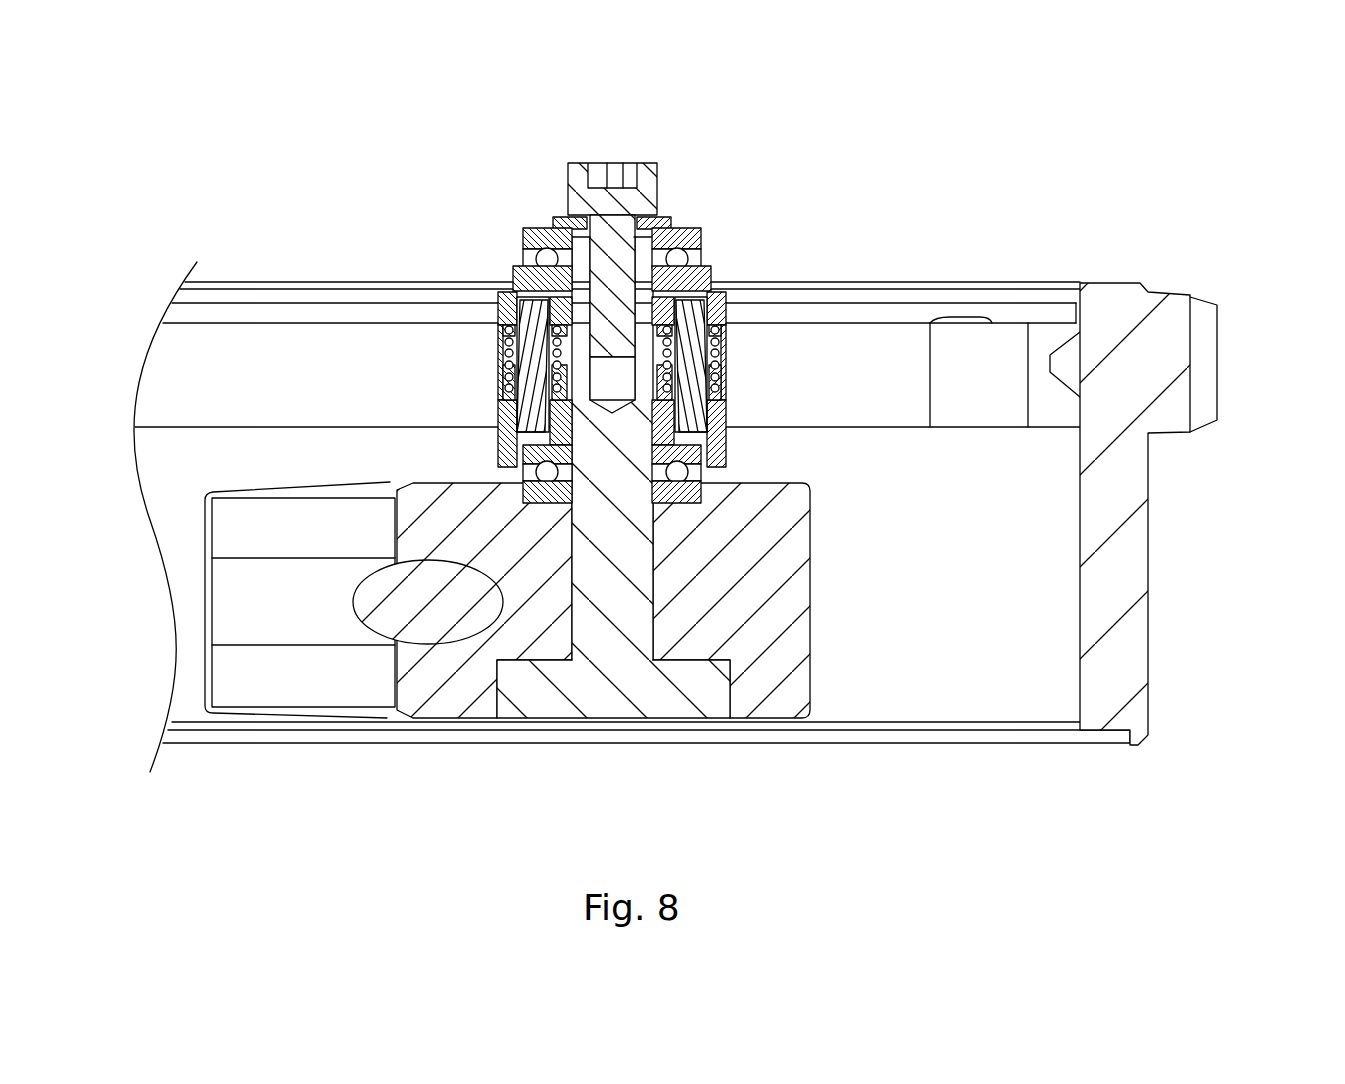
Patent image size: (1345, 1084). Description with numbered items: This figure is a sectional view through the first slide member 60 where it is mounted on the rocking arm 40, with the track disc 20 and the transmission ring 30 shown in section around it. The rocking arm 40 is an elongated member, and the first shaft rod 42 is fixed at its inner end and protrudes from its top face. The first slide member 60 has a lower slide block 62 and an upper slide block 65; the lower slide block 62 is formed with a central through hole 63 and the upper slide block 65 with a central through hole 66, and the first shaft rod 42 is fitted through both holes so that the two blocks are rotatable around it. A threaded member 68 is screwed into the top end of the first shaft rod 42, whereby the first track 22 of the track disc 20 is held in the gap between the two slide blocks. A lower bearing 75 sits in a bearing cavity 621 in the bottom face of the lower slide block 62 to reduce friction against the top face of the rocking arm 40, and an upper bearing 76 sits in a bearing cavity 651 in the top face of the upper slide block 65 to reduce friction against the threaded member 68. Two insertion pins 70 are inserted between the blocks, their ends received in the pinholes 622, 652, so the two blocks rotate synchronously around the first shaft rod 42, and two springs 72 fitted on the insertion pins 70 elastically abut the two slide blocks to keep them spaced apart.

The track disc 20 is at (1027, 257).
The first track 22 is at (200, 400).
The transmission ring 30 is at (1190, 634).
The rocking arm 40 is at (825, 614).
The first shaft rod 42 is at (610, 637).
The first slide member 60 is at (705, 172).
The lower slide block 62 is at (713, 443).
The bearing cavity 621 is at (508, 457).
The pinhole 622 is at (508, 415).
The central through hole 63 is at (700, 408).
The upper slide block 65 is at (728, 296).
The bearing cavity 651 is at (523, 290).
The pinhole 652 is at (498, 310).
The central through hole 66 is at (680, 262).
The threaded member 68 is at (583, 162).
The insertion pin 70 is at (508, 340).
The spring 72 is at (508, 360).
The lower bearing 75 is at (723, 462).
The upper bearing 76 is at (541, 230).